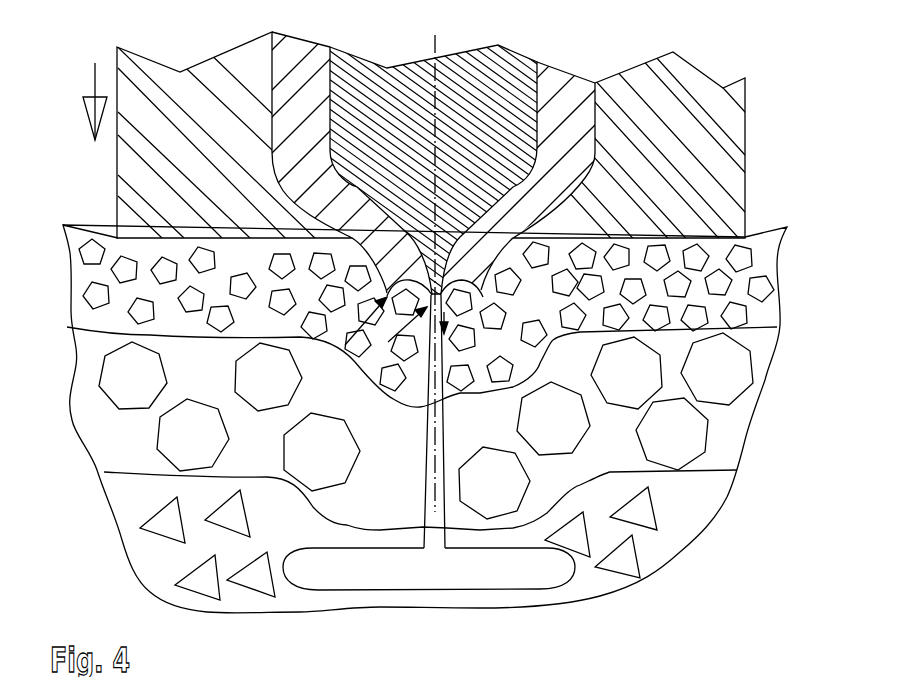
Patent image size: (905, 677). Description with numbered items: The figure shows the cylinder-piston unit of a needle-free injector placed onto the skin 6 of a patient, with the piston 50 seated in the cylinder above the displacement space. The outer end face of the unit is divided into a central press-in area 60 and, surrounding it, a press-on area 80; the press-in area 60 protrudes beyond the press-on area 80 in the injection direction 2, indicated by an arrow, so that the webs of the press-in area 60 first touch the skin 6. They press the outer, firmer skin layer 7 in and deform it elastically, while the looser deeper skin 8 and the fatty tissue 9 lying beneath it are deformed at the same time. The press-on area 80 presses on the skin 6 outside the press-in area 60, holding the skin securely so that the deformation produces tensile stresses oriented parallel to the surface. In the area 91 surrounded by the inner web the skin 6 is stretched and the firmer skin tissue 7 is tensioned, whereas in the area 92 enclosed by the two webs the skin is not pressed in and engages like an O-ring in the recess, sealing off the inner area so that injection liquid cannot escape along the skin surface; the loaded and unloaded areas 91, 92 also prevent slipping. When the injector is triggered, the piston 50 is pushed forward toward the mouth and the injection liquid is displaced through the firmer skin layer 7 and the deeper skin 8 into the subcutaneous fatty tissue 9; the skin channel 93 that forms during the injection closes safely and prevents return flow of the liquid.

The piston 50 is at (368, 110).
The injection direction 2 is at (95, 80).
The press-on area 80 is at (280, 243).
The area enclosed by the two webs 92 is at (368, 340).
The area surrounded by the inner web 91 is at (388, 350).
The press-in area 60 is at (406, 358).
The outer, firmer skin layer 7 is at (123, 327).
The skin 6 is at (190, 377).
The skin channel 93 is at (427, 447).
The deeper skin 8 is at (152, 438).
The fatty tissue 9 is at (152, 498).